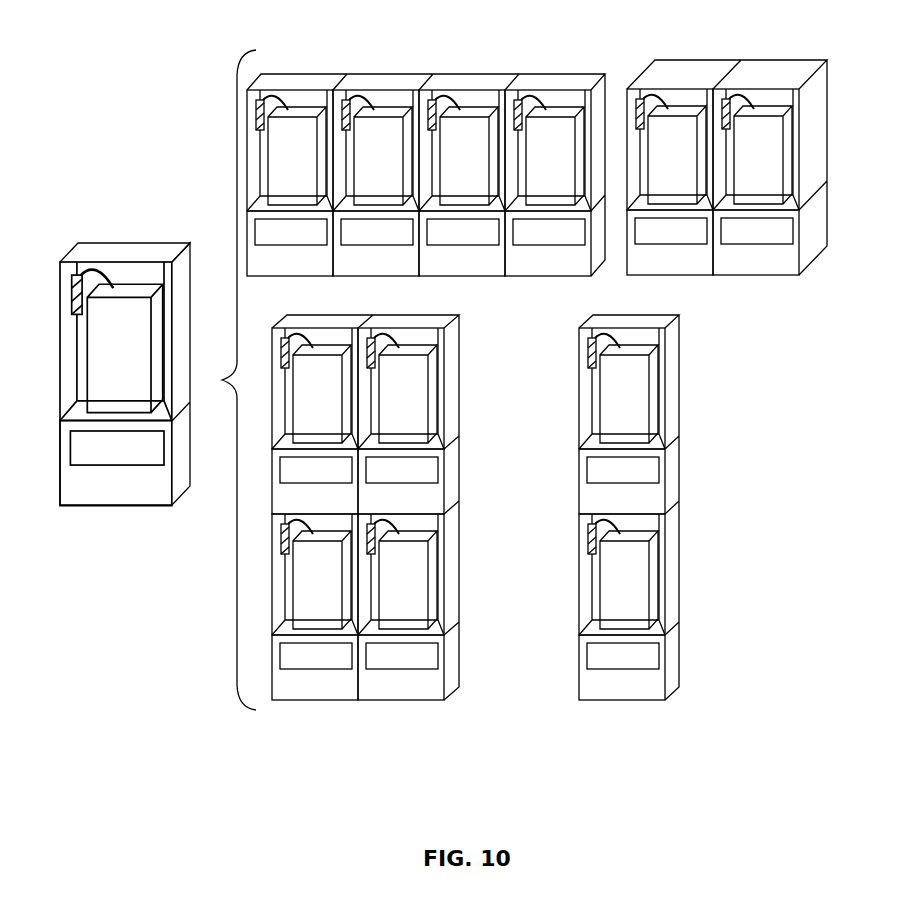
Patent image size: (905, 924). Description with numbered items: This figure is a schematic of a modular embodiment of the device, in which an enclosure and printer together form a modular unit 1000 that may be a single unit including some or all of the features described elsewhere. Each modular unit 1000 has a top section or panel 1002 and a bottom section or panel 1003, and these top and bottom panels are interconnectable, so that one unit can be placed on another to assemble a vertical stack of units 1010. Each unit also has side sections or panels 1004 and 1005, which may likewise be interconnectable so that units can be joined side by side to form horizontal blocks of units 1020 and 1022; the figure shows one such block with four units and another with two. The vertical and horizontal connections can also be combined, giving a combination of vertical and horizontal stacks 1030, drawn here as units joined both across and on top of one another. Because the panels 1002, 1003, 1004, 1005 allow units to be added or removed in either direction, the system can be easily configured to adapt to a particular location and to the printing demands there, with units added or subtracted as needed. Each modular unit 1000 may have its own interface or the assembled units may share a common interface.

The modular unit 1000 is at (123, 227).
The top section or panel 1002 is at (145, 242).
The bottom section or panel 1003 is at (145, 506).
The side section or panel 1004 is at (60, 452).
The side section or panel 1005 is at (190, 453).
The horizontal block of units 1020 is at (350, 42).
The horizontal block of units 1022 is at (710, 42).
The combination of vertical and horizontal stacks 1030 is at (357, 723).
The vertical stack of units 1010 is at (603, 715).